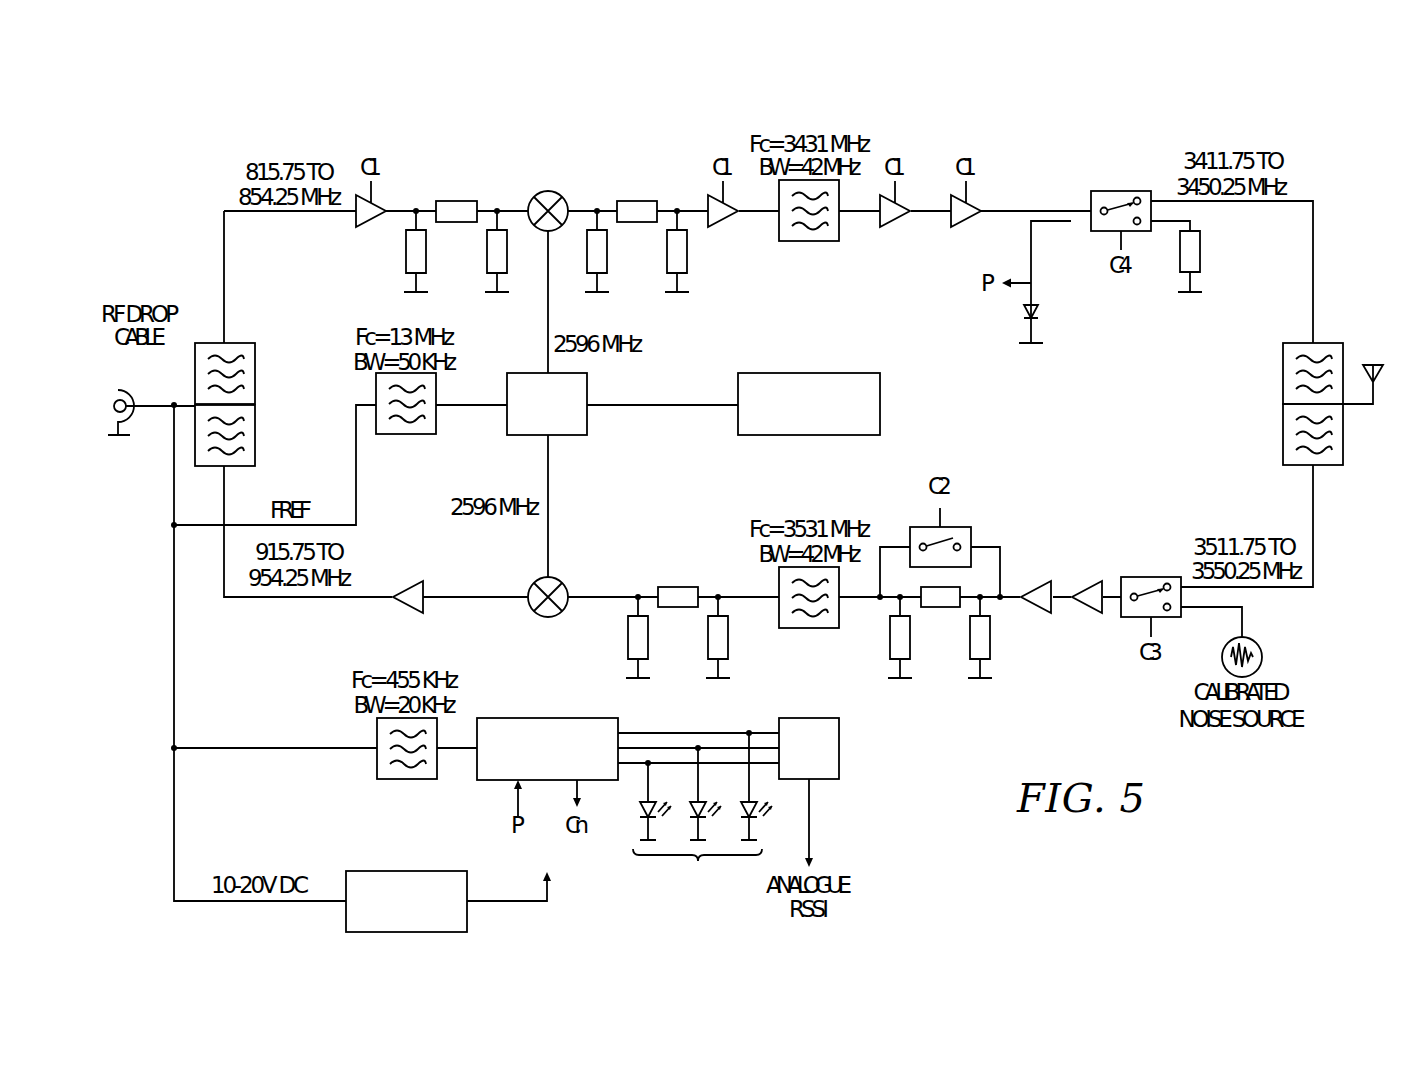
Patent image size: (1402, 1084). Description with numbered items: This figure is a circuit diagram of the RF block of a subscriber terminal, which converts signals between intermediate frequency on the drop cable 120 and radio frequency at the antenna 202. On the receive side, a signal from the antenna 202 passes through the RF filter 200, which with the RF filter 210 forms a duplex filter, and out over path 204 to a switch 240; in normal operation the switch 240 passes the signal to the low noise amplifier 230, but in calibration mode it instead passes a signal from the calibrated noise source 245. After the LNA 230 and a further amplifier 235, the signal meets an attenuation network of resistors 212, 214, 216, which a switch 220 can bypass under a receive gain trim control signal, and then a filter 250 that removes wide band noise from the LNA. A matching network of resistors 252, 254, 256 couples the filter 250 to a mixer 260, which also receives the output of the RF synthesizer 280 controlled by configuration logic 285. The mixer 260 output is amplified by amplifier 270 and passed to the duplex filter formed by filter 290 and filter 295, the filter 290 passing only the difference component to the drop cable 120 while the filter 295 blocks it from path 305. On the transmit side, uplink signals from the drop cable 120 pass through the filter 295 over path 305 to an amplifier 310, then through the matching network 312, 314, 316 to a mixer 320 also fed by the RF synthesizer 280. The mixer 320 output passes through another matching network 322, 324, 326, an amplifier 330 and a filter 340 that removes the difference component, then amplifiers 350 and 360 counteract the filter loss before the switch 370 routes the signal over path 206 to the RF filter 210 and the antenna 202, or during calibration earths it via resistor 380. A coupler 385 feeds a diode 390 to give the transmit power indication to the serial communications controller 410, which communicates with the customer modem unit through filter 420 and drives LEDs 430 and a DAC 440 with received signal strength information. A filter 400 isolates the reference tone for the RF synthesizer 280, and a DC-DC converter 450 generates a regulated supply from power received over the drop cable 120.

The drop cable 120 is at (154, 400).
The RF filter 200 is at (1282, 438).
The antenna 202 is at (1362, 407).
The path 204 is at (1314, 519).
The path 206 is at (1314, 263).
The RF filter 210 is at (1282, 378).
The resistor 212 is at (885, 648).
The resistor 214 is at (992, 640).
The resistor 216 is at (935, 609).
The switch 220 is at (923, 527).
The low noise amplifier 230 is at (1081, 583).
The amplifier 235 is at (1029, 583).
The switch 240 is at (1154, 576).
The calibrated noise source 245 is at (1264, 658).
The filter 250 is at (810, 628).
The resistor 252 is at (627, 640).
The resistor 254 is at (707, 643).
The resistor 256 is at (673, 586).
The mixer 260 is at (562, 583).
The amplifier 270 is at (404, 612).
The RF synthesizer 280 is at (589, 415).
The configuration logic 285 is at (812, 372).
The filter 290 is at (256, 436).
The filter 295 is at (256, 376).
The path 305 is at (224, 262).
The amplifier 310 is at (355, 215).
The matching network 312 is at (406, 254).
The matching network 314 is at (457, 201).
The matching network 316 is at (487, 263).
The mixer 320 is at (548, 191).
The matching network 322 is at (607, 262).
The matching network 324 is at (640, 201).
The matching network 326 is at (687, 262).
The amplifier 330 is at (725, 224).
The filter 340 is at (813, 242).
The amplifier 350 is at (897, 224).
The amplifier 360 is at (969, 224).
The switch 370 is at (1124, 191).
The resistor 380 is at (1201, 255).
The coupler 385 is at (1043, 222).
The diode 390 is at (1021, 312).
The filter 400 is at (408, 437).
The serial communications controller 410 is at (535, 718).
The filter 420 is at (376, 762).
The LEDs 430 is at (702, 812).
The DAC 440 is at (843, 752).
The DC-DC converter 450 is at (469, 911).